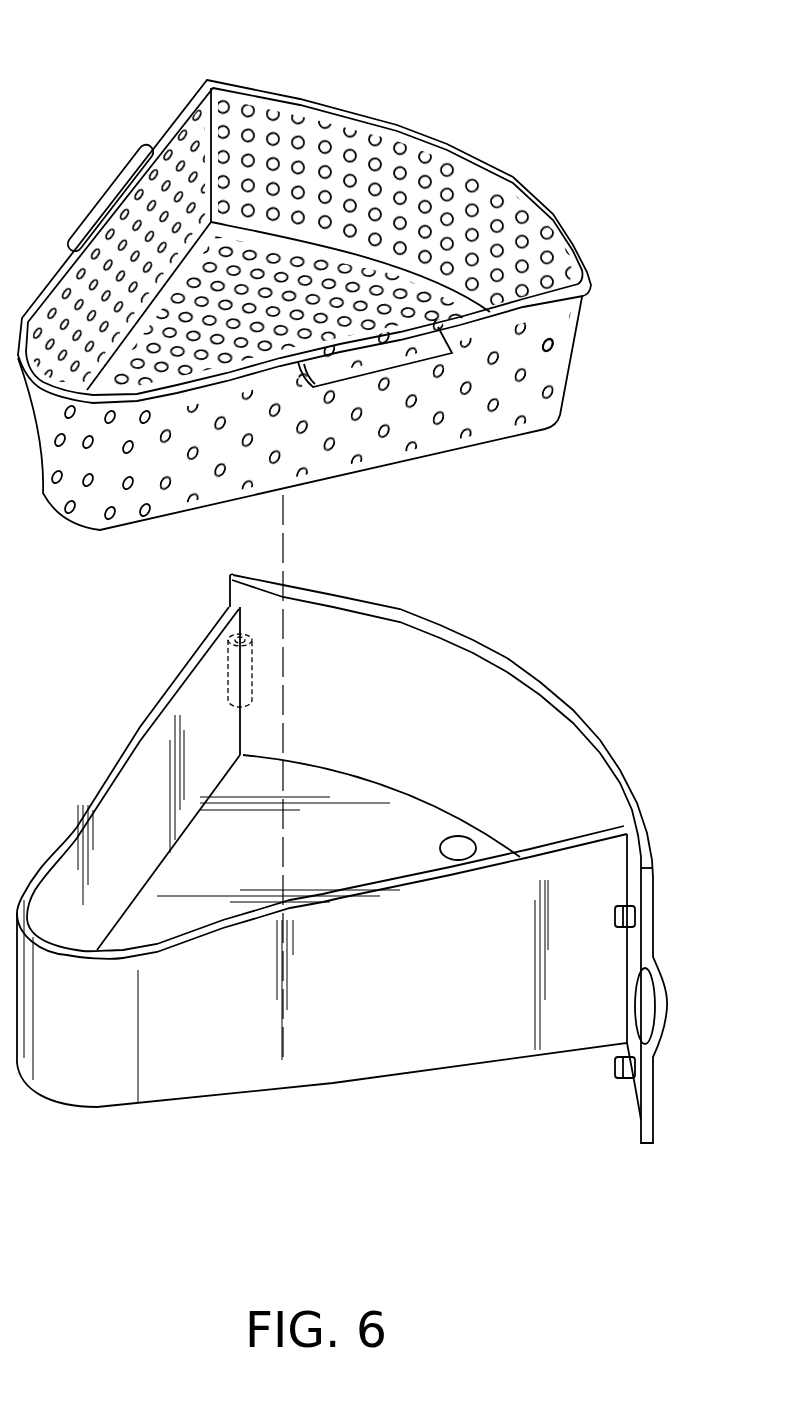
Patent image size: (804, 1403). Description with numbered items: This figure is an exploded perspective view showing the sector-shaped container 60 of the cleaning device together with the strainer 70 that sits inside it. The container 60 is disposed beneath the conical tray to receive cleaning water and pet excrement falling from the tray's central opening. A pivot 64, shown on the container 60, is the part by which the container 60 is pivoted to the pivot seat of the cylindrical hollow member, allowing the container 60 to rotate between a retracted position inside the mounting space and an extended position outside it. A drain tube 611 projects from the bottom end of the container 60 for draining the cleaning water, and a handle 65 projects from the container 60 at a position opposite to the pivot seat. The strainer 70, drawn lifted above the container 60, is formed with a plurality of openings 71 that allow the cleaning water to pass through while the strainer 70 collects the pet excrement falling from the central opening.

The sector-shaped container 60 is at (184, 1118).
The drain tube 611 is at (455, 846).
The pivot 64 is at (232, 678).
The handle 65 is at (666, 996).
The strainer 70 is at (168, 124).
The openings 71 is at (550, 342).